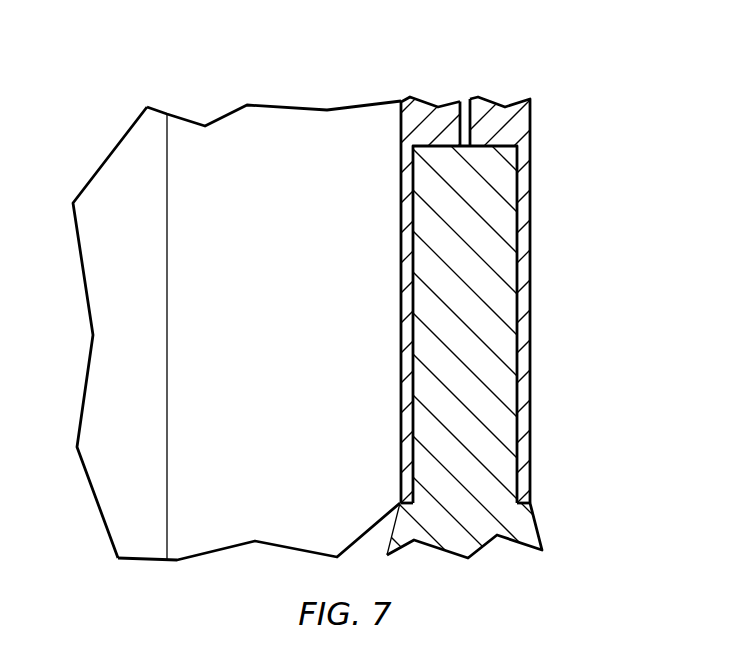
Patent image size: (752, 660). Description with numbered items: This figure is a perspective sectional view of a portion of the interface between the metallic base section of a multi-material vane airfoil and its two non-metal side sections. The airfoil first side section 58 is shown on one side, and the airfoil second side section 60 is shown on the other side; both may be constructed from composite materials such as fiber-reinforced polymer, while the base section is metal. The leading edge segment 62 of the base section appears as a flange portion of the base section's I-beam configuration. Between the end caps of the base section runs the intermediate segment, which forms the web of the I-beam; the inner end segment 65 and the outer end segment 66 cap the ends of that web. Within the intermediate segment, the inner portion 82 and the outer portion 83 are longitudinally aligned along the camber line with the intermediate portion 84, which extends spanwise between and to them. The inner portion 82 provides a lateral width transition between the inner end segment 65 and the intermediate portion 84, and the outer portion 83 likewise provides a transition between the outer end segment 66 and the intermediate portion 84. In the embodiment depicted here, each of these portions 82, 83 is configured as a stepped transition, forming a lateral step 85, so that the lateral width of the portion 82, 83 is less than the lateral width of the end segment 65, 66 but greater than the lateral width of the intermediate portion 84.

The airfoil first side section 58 is at (298, 108).
The airfoil second side section 60 is at (538, 212).
The leading edge segment 62 is at (96, 171).
The inner end segment 65 is at (531, 520).
The outer end segment 66 is at (548, 522).
The inner portion 82 is at (376, 352).
The outer portion 83 is at (522, 321).
The intermediate portion 84 is at (478, 116).
The lateral step 85 is at (533, 502).